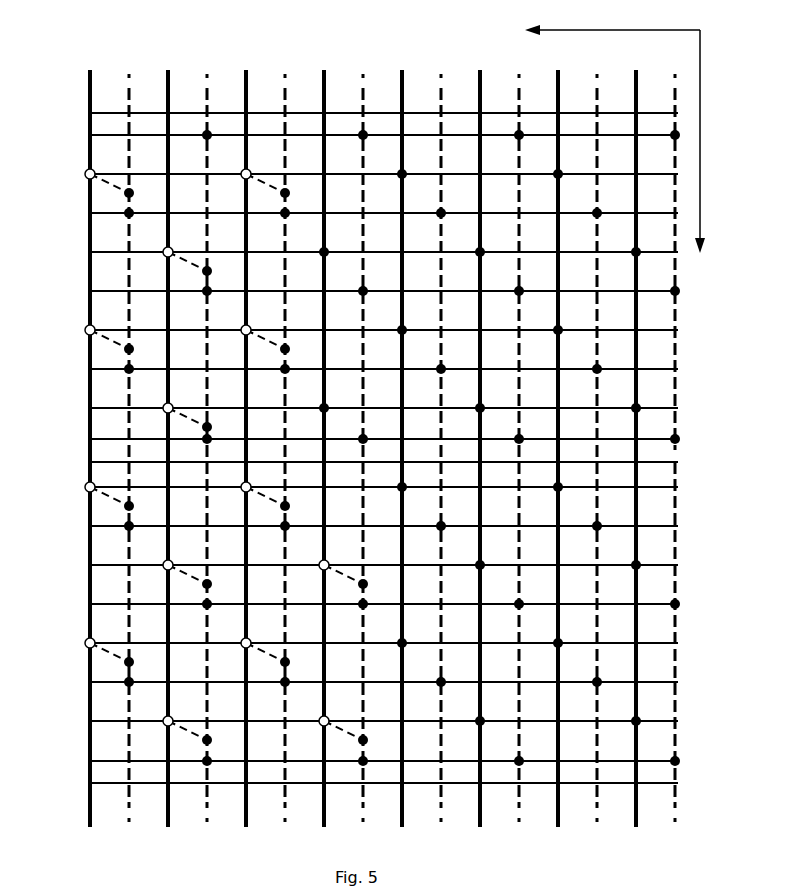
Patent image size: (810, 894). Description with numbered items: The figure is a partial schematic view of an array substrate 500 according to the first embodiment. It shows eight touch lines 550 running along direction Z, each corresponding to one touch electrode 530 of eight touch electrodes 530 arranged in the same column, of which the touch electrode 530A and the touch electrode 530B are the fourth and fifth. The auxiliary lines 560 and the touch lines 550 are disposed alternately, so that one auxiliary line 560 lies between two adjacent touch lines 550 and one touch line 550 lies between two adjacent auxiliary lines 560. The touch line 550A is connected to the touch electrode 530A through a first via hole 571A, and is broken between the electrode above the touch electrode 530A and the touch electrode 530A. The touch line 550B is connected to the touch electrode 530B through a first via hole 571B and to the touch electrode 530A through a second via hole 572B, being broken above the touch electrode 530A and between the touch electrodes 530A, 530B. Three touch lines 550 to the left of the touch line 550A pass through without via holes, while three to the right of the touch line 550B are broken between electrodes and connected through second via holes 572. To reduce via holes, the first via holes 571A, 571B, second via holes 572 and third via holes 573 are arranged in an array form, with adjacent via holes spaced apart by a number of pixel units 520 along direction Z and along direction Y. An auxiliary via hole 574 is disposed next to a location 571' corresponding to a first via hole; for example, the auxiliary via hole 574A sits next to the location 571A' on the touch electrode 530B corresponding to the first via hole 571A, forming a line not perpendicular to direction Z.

The array substrate 500 is at (113, 31).
The touch line 550 is at (88, 145).
The touch line 550A is at (322, 212).
The touch line 550B is at (403, 173).
The auxiliary line 560 is at (127, 232).
The touch electrode 530 is at (583, 83).
The touch electrode 530A is at (672, 388).
The touch electrode 530B is at (676, 583).
The pixel unit 520 is at (660, 500).
The first via hole 571A is at (383, 165).
The first via hole 571B is at (403, 645).
The location corresponding to a first via hole 571' is at (65, 318).
The location corresponding to the first via hole 571A 571A' is at (183, 551).
The second via hole 572 is at (560, 330).
The second via hole 572B is at (403, 173).
The third via hole 573 is at (127, 682).
The auxiliary via hole 574 is at (127, 368).
The auxiliary via hole 574A is at (360, 580).